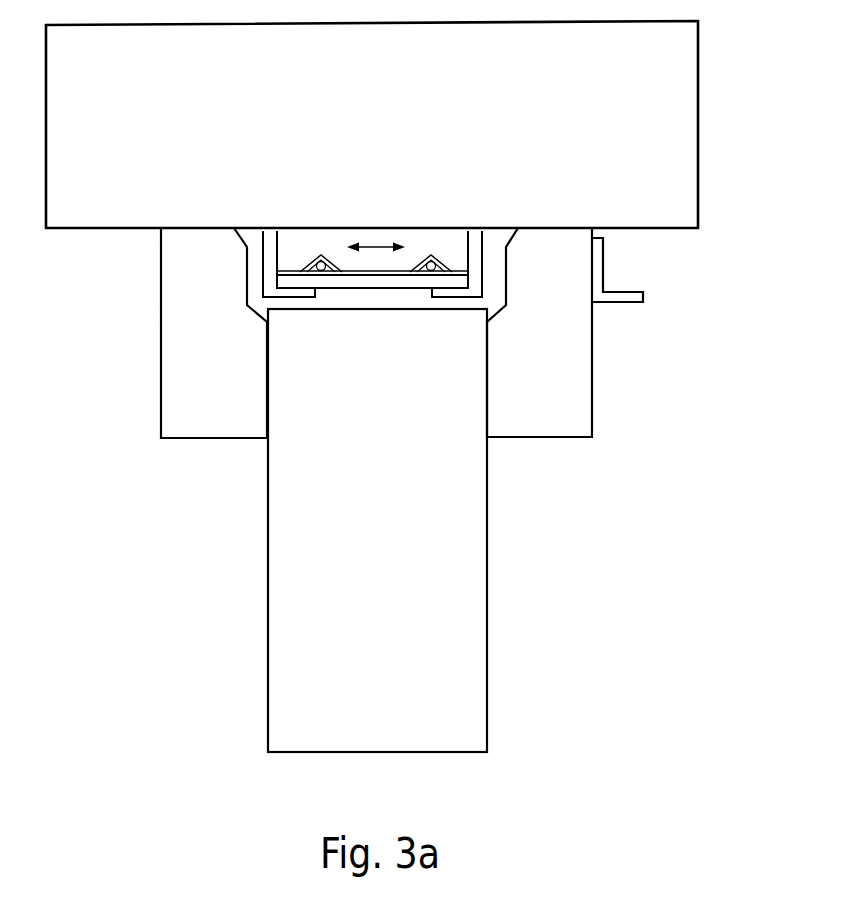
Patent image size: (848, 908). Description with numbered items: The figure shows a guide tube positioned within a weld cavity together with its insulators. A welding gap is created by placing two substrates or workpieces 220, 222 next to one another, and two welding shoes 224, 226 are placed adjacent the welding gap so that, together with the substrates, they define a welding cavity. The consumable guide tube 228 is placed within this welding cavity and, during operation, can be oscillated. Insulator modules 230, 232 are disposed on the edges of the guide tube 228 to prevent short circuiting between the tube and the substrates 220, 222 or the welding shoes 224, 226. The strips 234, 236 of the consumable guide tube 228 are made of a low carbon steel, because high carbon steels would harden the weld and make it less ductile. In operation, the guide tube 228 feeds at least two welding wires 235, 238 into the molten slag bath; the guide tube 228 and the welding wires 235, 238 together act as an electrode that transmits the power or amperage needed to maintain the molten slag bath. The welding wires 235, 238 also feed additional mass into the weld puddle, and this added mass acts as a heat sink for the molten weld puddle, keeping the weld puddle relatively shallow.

The substrate 220 is at (665, 102).
The substrate 222 is at (472, 582).
The welding shoe 224 is at (567, 355).
The welding shoe 226 is at (203, 362).
The guide tube 228 is at (333, 230).
The insulator module 230 is at (270, 231).
The insulator module 232 is at (477, 237).
The strip 234 is at (410, 230).
The welding wire 235 is at (327, 260).
The strip 236 is at (330, 288).
The welding wire 238 is at (433, 243).